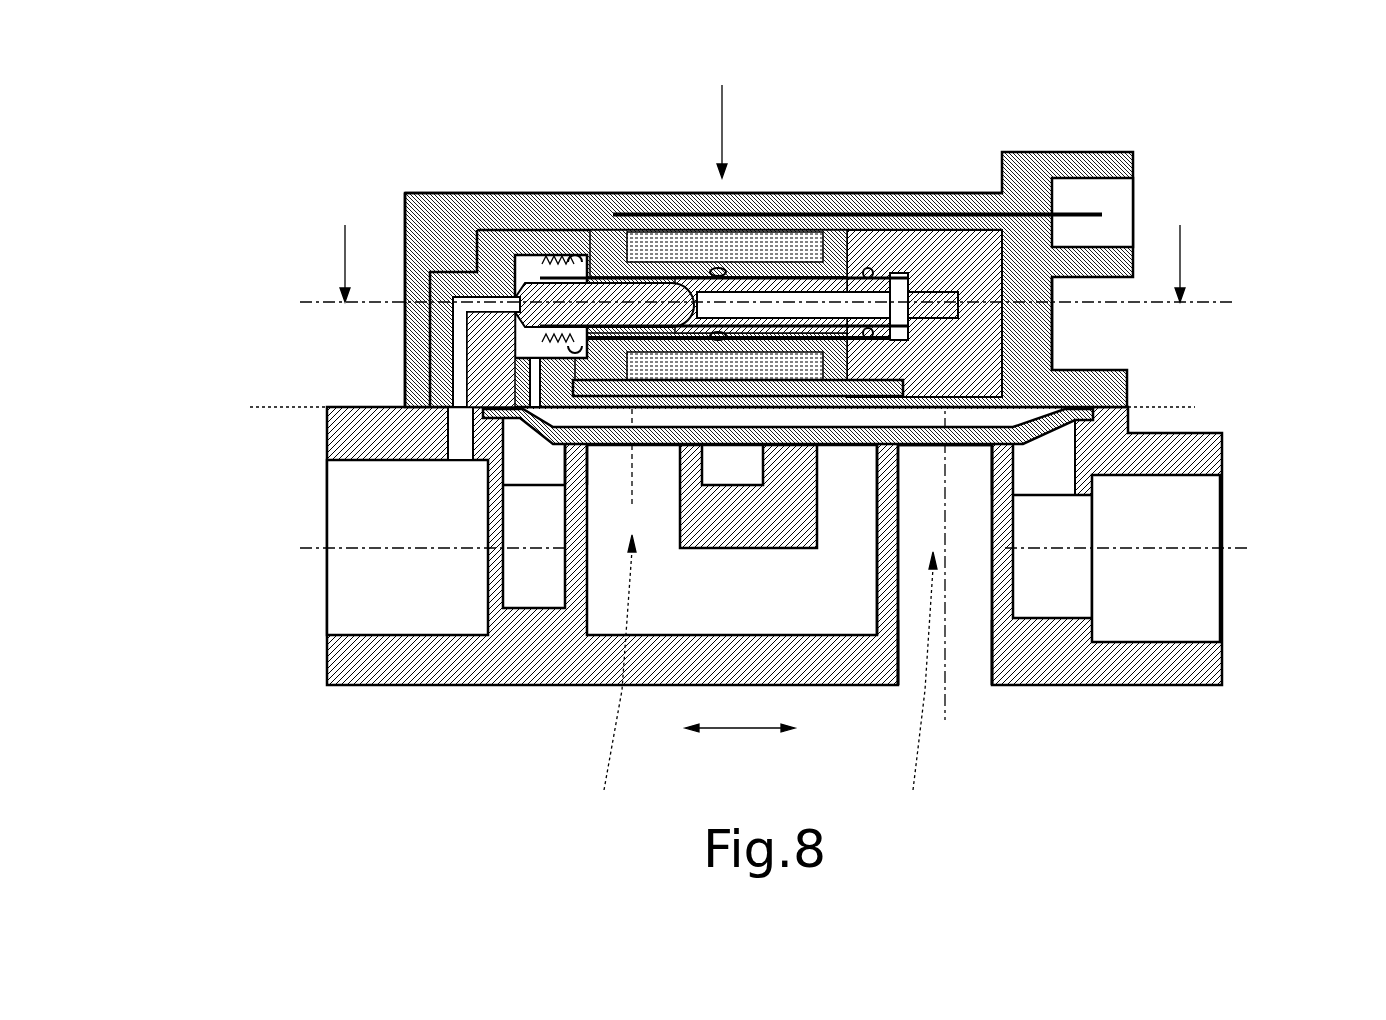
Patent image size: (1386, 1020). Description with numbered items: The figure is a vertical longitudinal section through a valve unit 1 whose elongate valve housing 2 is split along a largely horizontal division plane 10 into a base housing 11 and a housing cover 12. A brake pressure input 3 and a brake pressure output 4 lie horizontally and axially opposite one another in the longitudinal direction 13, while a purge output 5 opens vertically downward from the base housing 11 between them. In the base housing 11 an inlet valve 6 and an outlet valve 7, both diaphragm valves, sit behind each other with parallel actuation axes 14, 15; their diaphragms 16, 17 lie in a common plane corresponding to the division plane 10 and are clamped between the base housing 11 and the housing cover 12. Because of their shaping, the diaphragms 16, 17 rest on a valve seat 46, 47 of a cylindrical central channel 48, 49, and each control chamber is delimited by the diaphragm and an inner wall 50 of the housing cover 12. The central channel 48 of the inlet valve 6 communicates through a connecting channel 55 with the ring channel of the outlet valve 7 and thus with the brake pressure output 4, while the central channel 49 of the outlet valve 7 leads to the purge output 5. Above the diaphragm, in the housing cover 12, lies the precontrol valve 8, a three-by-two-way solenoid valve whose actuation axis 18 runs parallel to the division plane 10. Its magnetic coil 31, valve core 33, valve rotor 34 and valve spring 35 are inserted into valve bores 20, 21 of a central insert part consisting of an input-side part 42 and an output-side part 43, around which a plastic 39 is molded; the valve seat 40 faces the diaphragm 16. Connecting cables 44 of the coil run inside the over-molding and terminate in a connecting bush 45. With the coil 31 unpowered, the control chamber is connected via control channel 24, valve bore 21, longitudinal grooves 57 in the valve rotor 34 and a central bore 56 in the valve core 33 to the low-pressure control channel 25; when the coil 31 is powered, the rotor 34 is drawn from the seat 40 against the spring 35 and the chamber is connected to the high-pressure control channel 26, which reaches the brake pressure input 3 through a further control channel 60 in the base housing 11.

The valve unit 1 is at (755, 439).
The valve housing 2 is at (755, 439).
The brake pressure input 3 is at (355, 612).
The brake pressure output 4 is at (1190, 602).
The purge output 5 is at (969, 617).
The inlet valve 6 is at (616, 679).
The outlet valve 7 is at (918, 688).
The precontrol valve 8 is at (721, 116).
The division plane 10 is at (250, 407).
The base housing 11 is at (755, 609).
The housing cover 12 is at (755, 231).
The longitudinal direction 13 is at (740, 743).
The actuation axis 14 is at (632, 508).
The actuation axis 15 is at (945, 540).
The diaphragm 16 is at (575, 458).
The diaphragm 17 is at (1015, 460).
The actuation axis 18 is at (1083, 305).
The valve bore 20 is at (897, 300).
The valve bore 21 is at (530, 262).
The control channel 24 is at (540, 380).
The control channel 25 is at (935, 300).
The control channel 26 is at (460, 340).
The magnetic coil 31 is at (768, 235).
The valve core 33 is at (845, 260).
The valve rotor 34 is at (583, 262).
The valve spring 35 is at (548, 255).
The plastic over-molding 39 is at (520, 300).
The valve seat 40 is at (402, 203).
The input-side part 42 is at (492, 235).
The output-side part 43 is at (942, 352).
The connecting cables 44 is at (672, 230).
The connecting bush 45 is at (1105, 198).
The valve seat 46 is at (540, 442).
The valve seat 47 is at (1050, 500).
The central channel 48 is at (618, 493).
The central channel 49 is at (928, 493).
The inner wall 50 is at (997, 415).
The connecting channel 55 is at (732, 522).
The central bore 56 is at (805, 215).
The longitudinal grooves 57 is at (617, 237).
The further control channel 60 is at (458, 432).